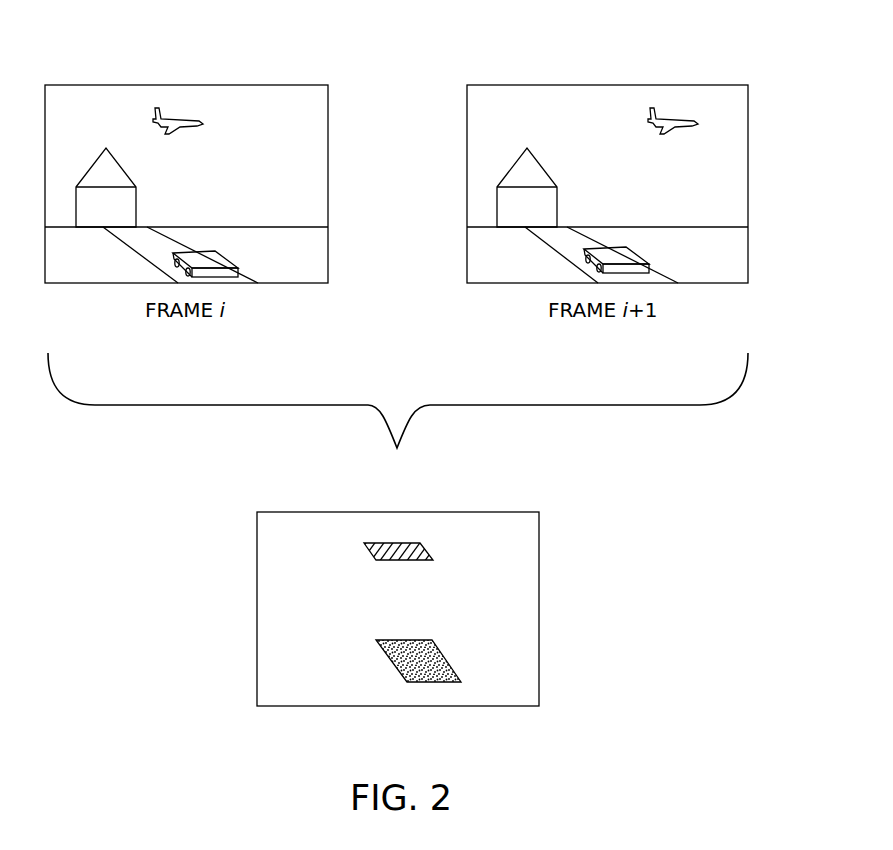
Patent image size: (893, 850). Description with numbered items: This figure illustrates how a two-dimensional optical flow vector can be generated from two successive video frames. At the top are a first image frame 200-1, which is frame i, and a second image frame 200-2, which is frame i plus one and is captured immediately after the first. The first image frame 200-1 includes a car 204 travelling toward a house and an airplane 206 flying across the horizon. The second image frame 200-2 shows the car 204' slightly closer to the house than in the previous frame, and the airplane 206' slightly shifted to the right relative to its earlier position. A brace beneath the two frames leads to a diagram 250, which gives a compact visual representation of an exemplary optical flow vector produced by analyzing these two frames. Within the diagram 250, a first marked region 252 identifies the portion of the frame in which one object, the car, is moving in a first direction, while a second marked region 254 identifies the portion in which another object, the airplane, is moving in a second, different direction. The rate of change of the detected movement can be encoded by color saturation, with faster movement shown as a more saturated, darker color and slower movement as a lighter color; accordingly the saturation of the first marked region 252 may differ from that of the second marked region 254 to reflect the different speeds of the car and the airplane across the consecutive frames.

The first image frame 200-1 is at (253, 60).
The second image frame 200-2 is at (673, 60).
The car 204 is at (227, 253).
The car 204' is at (644, 251).
The airplane 206 is at (172, 143).
The airplane 206' is at (665, 143).
The diagram 250 is at (533, 493).
The first marked region 252 is at (438, 663).
The second marked region 254 is at (417, 550).